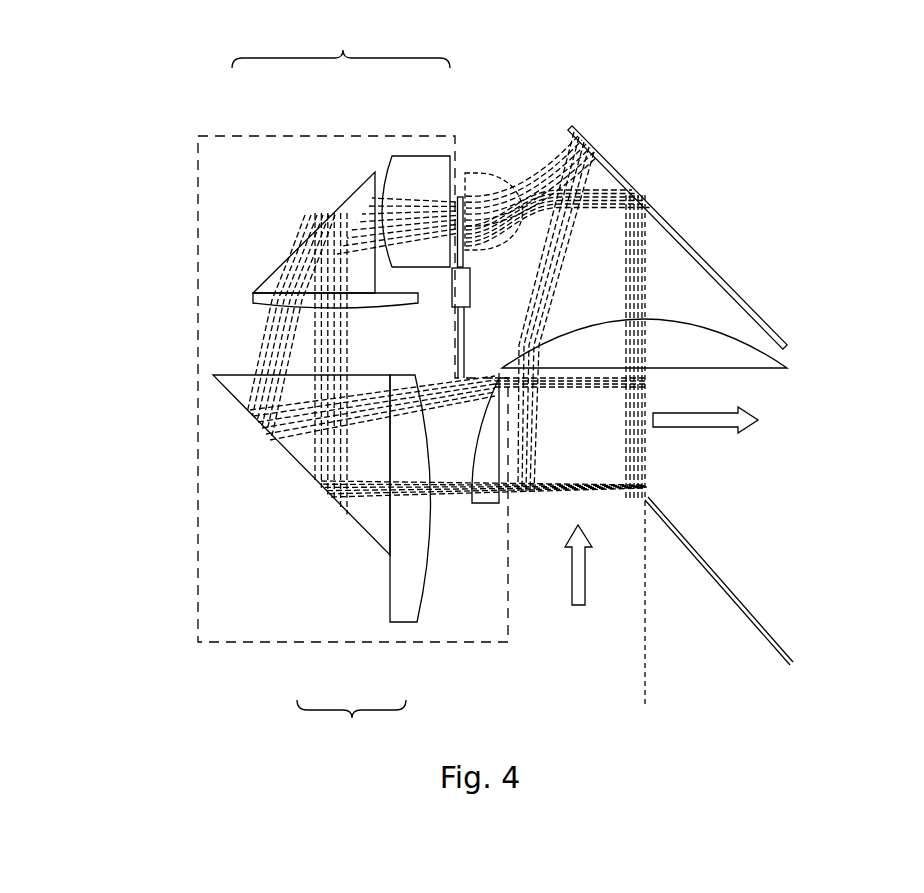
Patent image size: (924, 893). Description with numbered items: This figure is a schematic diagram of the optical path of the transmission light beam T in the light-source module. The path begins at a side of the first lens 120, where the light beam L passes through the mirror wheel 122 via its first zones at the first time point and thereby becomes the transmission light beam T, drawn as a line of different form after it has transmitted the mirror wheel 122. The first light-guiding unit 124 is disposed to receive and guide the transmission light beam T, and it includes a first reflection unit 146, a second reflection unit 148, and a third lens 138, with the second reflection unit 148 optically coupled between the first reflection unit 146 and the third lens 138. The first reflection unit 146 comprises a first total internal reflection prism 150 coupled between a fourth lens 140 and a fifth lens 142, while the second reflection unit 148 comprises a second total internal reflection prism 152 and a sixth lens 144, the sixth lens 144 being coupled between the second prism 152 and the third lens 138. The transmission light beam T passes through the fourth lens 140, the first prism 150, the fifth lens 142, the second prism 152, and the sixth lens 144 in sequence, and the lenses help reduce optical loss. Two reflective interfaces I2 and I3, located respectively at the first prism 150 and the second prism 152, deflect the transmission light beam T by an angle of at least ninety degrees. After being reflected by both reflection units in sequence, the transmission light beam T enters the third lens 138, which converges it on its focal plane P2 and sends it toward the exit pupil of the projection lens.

The first lens 120 is at (788, 367).
The mirror wheel 122 is at (461, 196).
The first light-guiding unit 124 is at (198, 262).
The third lens 138 is at (485, 504).
The fourth lens 140 is at (414, 156).
The fifth lens 142 is at (253, 293).
The sixth lens 144 is at (405, 623).
The first reflection unit 146 is at (341, 45).
The second reflection unit 148 is at (351, 721).
The first total internal reflection prism 150 is at (372, 174).
The second total internal reflection prism 152 is at (355, 525).
The reflective interface I2 is at (312, 233).
The reflective interface I3 is at (287, 456).
The light beam L is at (578, 607).
The transmission light beam T is at (762, 413).
The focal plane P2 is at (646, 487).